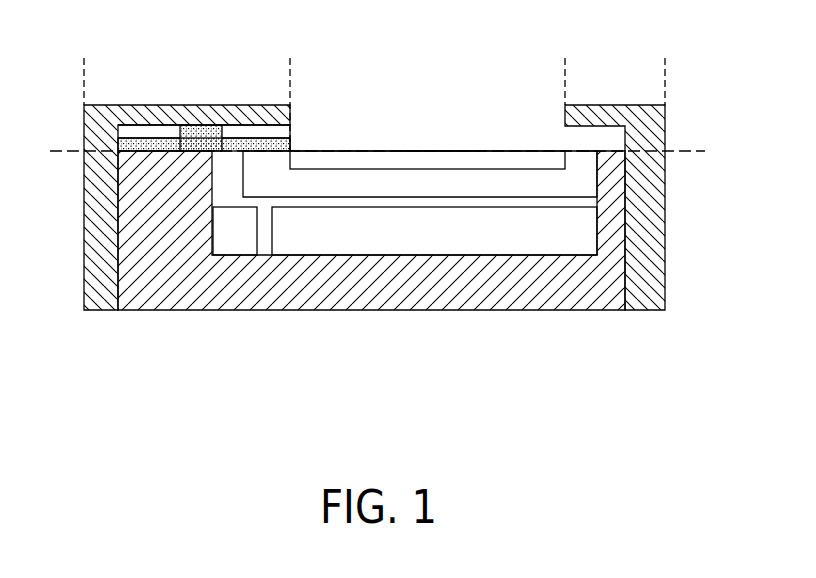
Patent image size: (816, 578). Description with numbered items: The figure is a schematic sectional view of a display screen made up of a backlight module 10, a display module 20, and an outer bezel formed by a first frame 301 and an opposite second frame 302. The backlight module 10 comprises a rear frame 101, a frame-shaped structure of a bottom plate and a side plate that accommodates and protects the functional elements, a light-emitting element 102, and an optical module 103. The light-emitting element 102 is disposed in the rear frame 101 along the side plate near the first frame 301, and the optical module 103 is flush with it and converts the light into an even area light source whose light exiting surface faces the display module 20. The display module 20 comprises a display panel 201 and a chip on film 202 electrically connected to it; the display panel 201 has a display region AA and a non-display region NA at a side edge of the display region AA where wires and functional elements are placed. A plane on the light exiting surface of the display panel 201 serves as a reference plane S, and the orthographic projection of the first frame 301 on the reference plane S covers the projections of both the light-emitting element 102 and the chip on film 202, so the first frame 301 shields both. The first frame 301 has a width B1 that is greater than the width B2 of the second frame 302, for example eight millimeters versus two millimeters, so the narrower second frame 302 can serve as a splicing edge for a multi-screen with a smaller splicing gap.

The backlight module 10 is at (371, 294).
The rear frame 101 is at (172, 303).
The light-emitting element 102 is at (242, 248).
The optical module 103 is at (298, 248).
The display module 20 is at (357, 98).
The display panel 201 is at (366, 151).
The chip on film 202 is at (270, 145).
The first frame 301 is at (88, 303).
The second frame 302 is at (653, 303).
The reference plane S is at (68, 148).
The display region AA is at (480, 151).
The non-display region NA is at (576, 151).
The width of the first frame B1 is at (288, 72).
The width of the second frame B2 is at (567, 73).